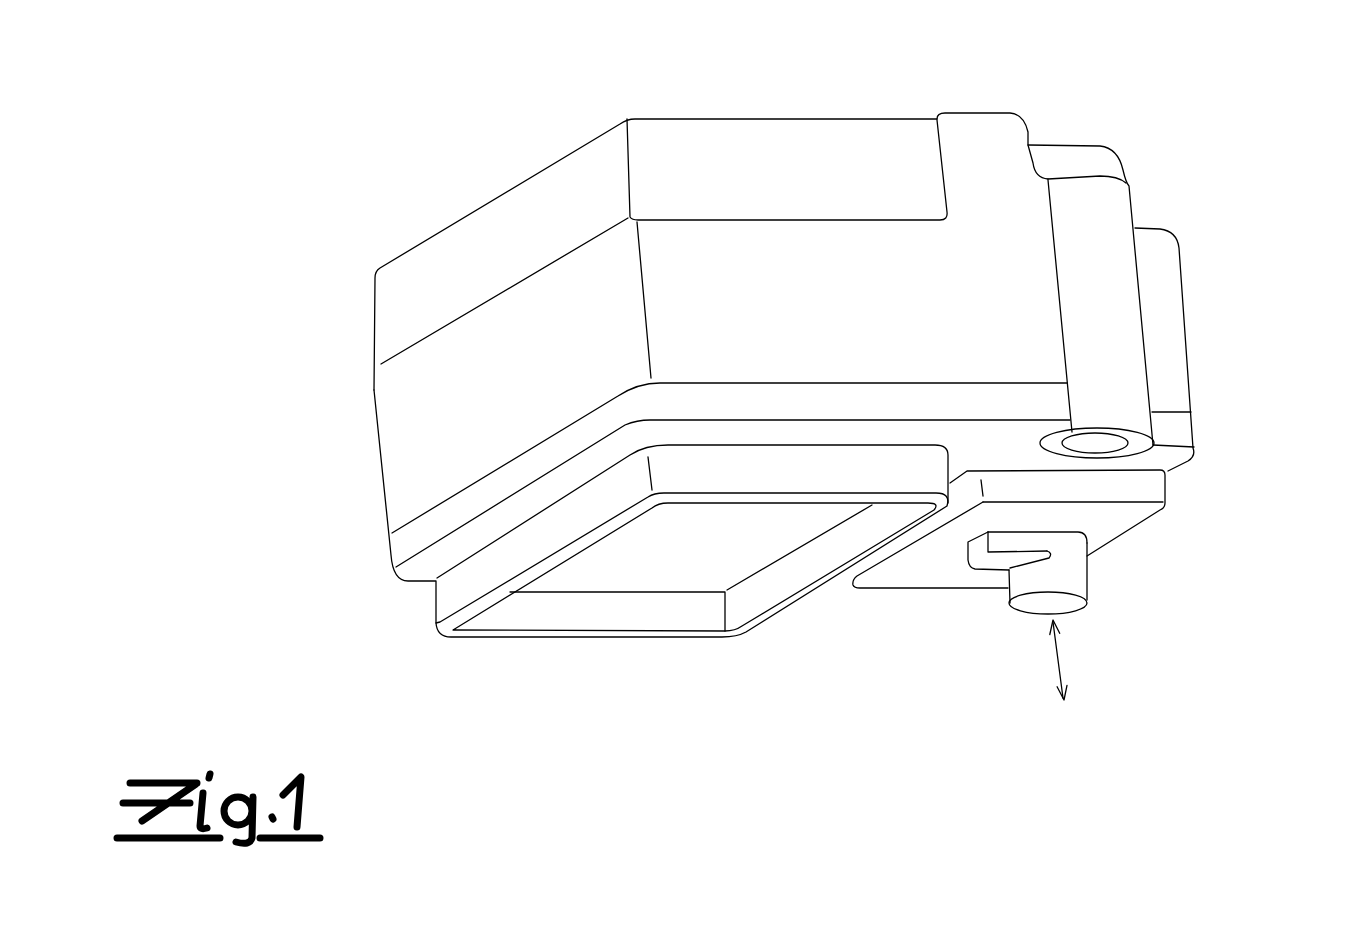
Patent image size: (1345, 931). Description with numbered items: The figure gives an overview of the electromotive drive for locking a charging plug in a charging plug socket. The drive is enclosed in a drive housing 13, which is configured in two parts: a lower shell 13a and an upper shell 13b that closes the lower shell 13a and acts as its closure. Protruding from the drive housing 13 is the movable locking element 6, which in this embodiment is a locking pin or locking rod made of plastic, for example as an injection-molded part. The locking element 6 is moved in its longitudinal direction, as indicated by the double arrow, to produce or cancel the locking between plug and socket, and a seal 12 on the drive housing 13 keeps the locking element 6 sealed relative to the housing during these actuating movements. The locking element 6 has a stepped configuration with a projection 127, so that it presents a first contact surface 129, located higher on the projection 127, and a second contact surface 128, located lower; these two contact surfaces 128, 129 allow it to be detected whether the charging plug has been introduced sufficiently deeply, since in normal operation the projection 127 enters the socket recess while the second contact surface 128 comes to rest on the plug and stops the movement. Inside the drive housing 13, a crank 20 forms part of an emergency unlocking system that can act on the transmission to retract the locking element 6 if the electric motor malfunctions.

The crank 20 is at (632, 105).
The drive housing 13 is at (1190, 316).
The lower shell 13a is at (383, 557).
The upper shell 13b is at (378, 436).
The seal 12 is at (1125, 525).
The projection 127 is at (1022, 587).
The second contact surface 128 is at (988, 565).
The first contact surface 129 is at (1035, 606).
The locking element 6 is at (1093, 593).